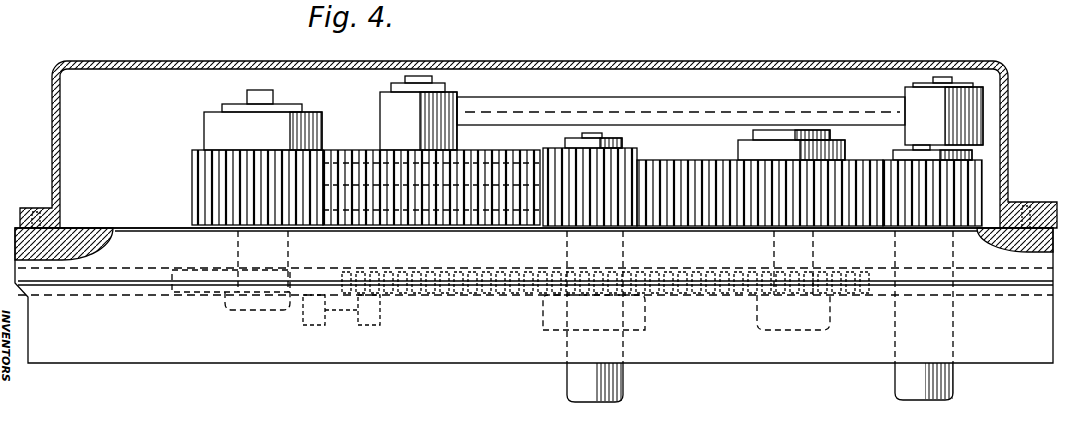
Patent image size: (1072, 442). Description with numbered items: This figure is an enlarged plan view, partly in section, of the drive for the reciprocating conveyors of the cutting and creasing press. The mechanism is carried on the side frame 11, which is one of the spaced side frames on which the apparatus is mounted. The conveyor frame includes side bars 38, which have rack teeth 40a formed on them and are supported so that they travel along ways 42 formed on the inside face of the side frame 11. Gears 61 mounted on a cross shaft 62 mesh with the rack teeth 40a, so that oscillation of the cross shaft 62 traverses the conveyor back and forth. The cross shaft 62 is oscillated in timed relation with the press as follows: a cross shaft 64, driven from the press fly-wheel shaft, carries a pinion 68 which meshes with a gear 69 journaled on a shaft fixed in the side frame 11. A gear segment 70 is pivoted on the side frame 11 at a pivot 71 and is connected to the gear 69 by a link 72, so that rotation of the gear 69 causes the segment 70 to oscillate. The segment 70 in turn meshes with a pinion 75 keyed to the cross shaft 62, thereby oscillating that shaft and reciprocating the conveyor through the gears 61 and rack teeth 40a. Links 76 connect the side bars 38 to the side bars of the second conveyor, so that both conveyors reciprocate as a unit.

The side frame 11 is at (422, 352).
The side bars 38 is at (207, 300).
The rack teeth 40a is at (849, 272).
The ways 42 is at (125, 271).
The gears 61 is at (446, 290).
The cross shaft 62 is at (580, 382).
The cross shaft 64 is at (940, 378).
The pinion 68 is at (912, 173).
The gear 69 is at (712, 170).
The gear segment 70 is at (360, 156).
The pivot 71 is at (240, 248).
The link 72 is at (668, 101).
The pinion 75 is at (642, 151).
The links 76 is at (349, 318).